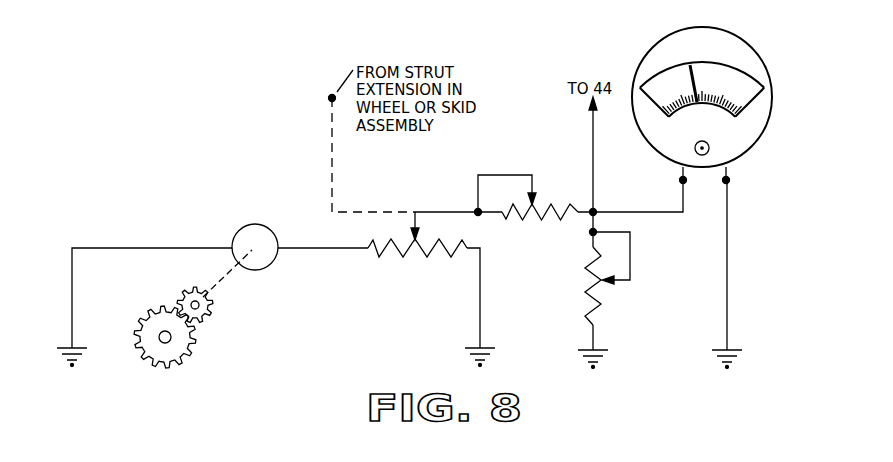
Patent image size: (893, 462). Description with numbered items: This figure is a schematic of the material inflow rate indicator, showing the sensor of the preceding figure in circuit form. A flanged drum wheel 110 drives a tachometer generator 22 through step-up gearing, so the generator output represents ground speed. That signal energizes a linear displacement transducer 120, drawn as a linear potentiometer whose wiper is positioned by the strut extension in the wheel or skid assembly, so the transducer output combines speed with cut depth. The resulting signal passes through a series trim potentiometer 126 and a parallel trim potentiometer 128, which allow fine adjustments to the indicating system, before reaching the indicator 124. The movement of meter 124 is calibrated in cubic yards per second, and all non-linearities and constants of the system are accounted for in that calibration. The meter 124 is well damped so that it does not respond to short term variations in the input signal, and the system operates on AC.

The tachometer generator 22 is at (276, 261).
The flanged drum wheel 110 is at (192, 345).
The linear displacement transducer 120 is at (410, 255).
The indicator 124 is at (752, 45).
The series trim potentiometer 126 is at (543, 205).
The parallel trim potentiometer 128 is at (598, 310).